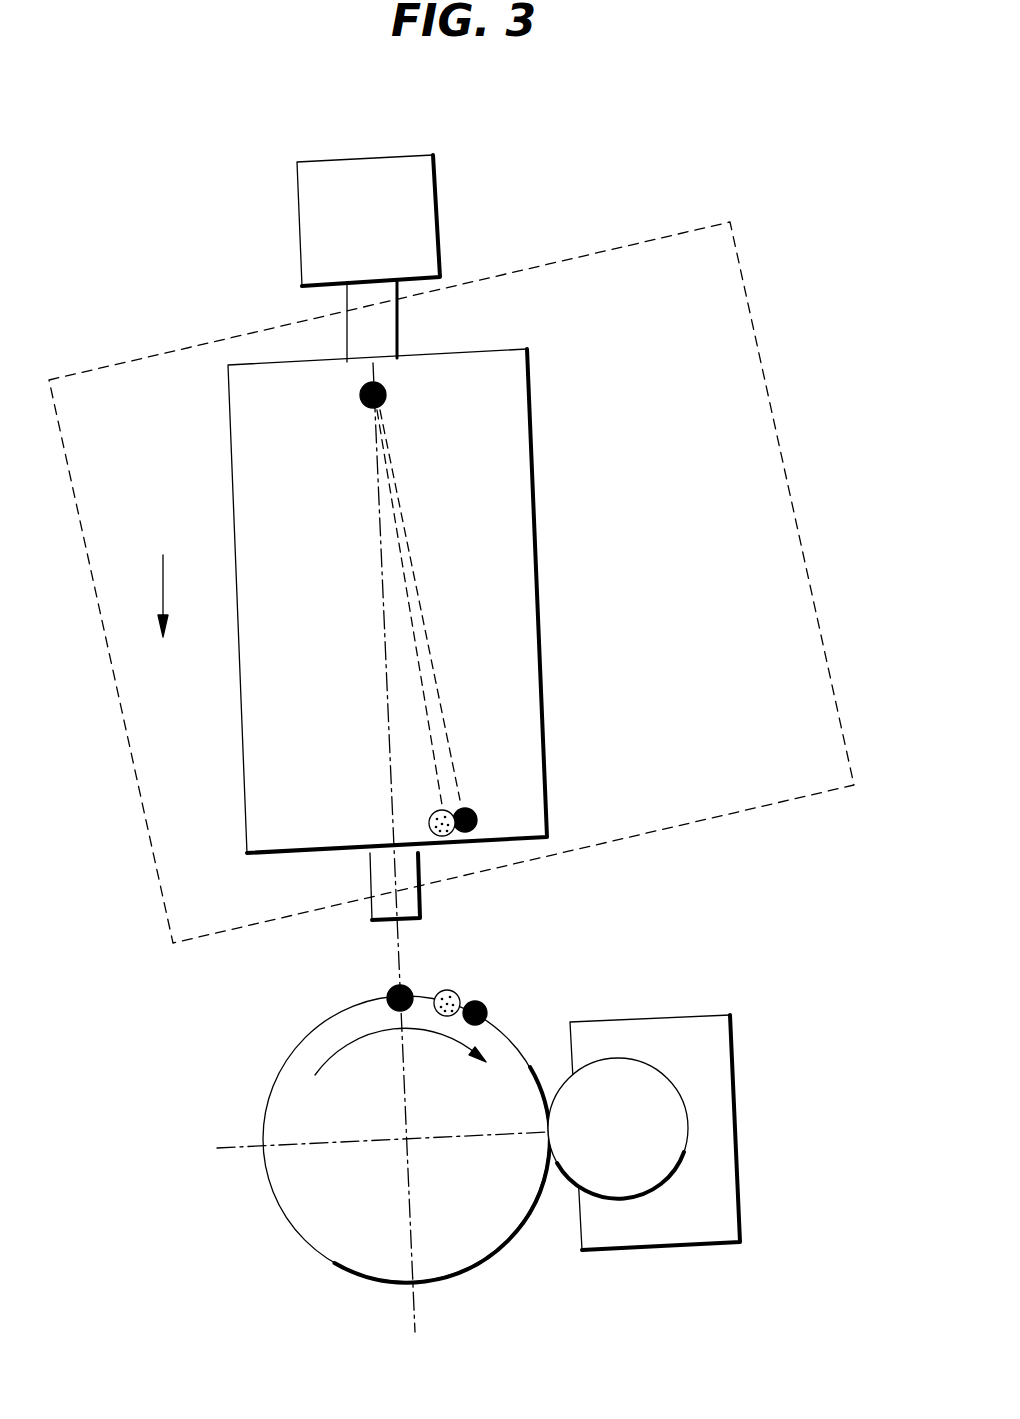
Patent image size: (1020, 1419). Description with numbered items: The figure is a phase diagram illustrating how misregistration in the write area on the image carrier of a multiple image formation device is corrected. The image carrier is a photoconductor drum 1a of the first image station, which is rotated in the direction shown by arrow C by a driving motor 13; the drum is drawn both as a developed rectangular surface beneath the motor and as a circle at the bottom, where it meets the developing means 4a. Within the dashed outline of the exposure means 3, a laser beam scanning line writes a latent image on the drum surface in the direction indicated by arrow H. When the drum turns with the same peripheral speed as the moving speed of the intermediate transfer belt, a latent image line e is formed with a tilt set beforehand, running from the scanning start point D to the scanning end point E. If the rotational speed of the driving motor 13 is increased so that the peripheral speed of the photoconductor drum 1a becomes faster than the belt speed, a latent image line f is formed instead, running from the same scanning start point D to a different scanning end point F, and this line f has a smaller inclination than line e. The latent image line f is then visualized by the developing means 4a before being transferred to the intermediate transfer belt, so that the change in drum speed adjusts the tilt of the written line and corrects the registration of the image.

The exposure means 3 is at (620, 247).
The driving motor 13 is at (427, 225).
The photoconductor drum 1a is at (512, 525).
The developing means 4a is at (670, 1032).
The scanning direction arrow H is at (149, 596).
The latent image line f is at (374, 607).
The latent image line e is at (485, 605).
The scanning start point D is at (372, 696).
The scanning end point E is at (486, 906).
The scanning end point F is at (478, 913).
The drum rotation direction arrow C is at (400, 1051).